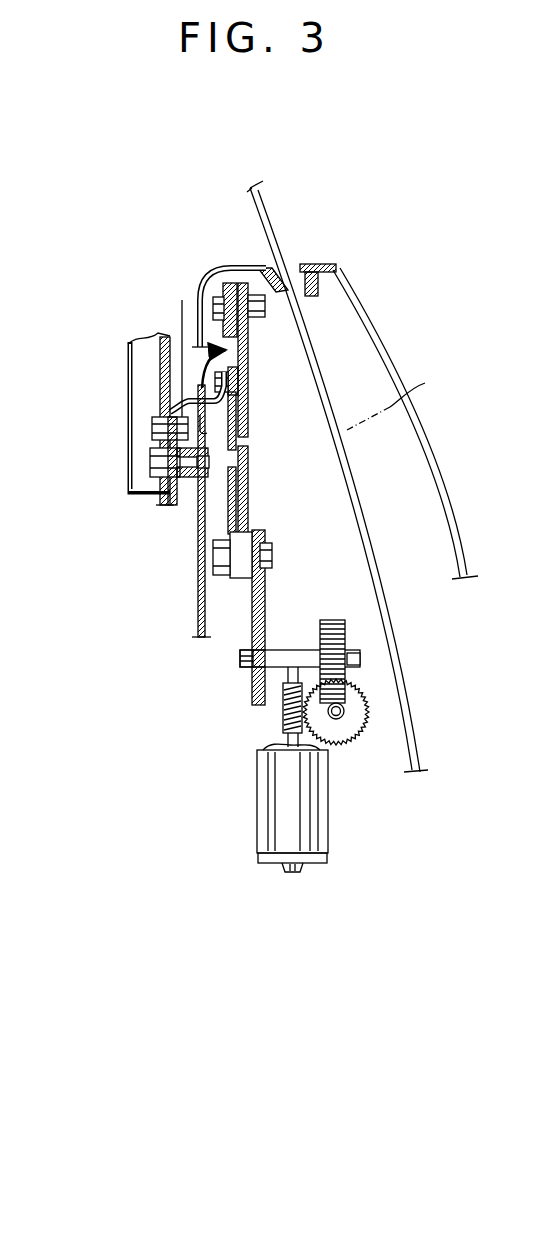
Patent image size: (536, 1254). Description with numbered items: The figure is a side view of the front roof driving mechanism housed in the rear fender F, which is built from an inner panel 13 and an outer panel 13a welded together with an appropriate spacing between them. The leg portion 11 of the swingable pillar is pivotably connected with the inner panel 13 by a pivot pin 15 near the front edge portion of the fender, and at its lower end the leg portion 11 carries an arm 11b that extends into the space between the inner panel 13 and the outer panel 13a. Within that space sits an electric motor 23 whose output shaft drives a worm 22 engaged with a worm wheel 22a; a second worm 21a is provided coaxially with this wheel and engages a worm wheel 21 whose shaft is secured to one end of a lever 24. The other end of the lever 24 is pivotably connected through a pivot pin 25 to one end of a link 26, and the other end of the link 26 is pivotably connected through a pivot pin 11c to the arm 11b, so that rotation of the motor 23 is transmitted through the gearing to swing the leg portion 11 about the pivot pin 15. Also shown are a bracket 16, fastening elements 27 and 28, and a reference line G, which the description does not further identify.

The leg portion 11 is at (128, 390).
The arm 11b is at (182, 300).
The pivot pin 11c is at (250, 385).
The inner panel 13 is at (200, 588).
The outer panel 13a is at (383, 347).
The pivot pin 15 is at (190, 488).
The hook bracket 16 is at (229, 283).
The worm wheel 21 is at (333, 618).
The second worm 21a is at (344, 708).
The worm 22 is at (283, 707).
The worm wheel 22a is at (353, 742).
The electric motor 23 is at (317, 828).
The lever 24 is at (267, 607).
The pivot pin 25 is at (267, 557).
The link 26 is at (226, 486).
The bolt 27 is at (255, 317).
The bolt 28 is at (248, 365).
The rear fender F is at (373, 308).
The gap line G is at (396, 397).